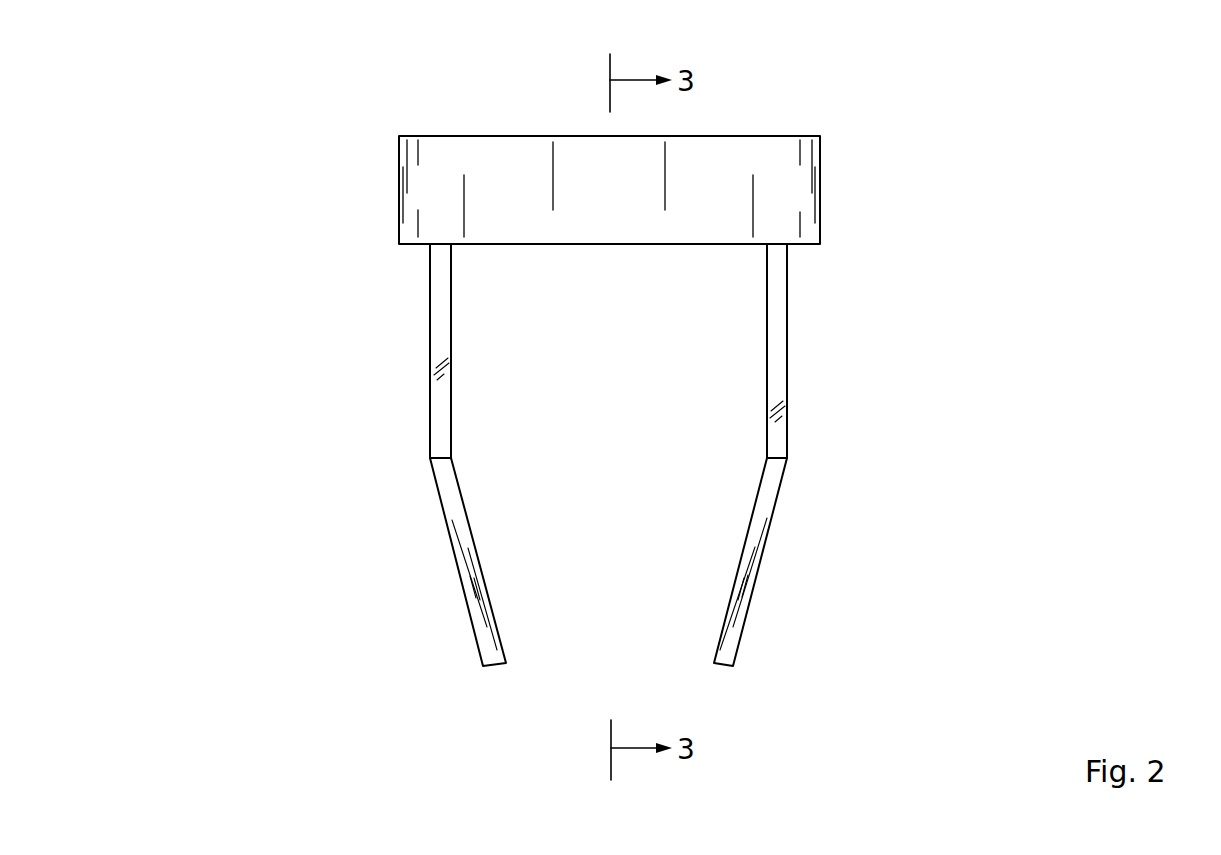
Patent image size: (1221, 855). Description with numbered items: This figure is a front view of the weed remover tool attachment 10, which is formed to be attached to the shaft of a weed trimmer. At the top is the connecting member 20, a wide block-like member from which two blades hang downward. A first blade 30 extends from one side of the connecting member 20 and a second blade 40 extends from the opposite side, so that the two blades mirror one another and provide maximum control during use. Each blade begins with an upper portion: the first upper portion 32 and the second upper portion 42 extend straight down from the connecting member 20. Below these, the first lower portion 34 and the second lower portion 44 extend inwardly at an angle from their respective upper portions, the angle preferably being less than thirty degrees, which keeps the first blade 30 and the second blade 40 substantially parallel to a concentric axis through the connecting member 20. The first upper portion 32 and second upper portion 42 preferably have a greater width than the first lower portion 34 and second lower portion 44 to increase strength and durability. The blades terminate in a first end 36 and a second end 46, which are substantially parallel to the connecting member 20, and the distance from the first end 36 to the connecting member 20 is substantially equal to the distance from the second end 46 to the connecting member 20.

The weed remover tool attachment 10 is at (266, 120).
The connecting member 20 is at (781, 146).
The first blade 30 is at (392, 482).
The first upper portion 32 is at (438, 328).
The first lower portion 34 is at (450, 505).
The first end 36 is at (495, 667).
The second blade 40 is at (821, 489).
The second upper portion 42 is at (778, 332).
The second lower portion 44 is at (767, 497).
The second end 46 is at (723, 667).